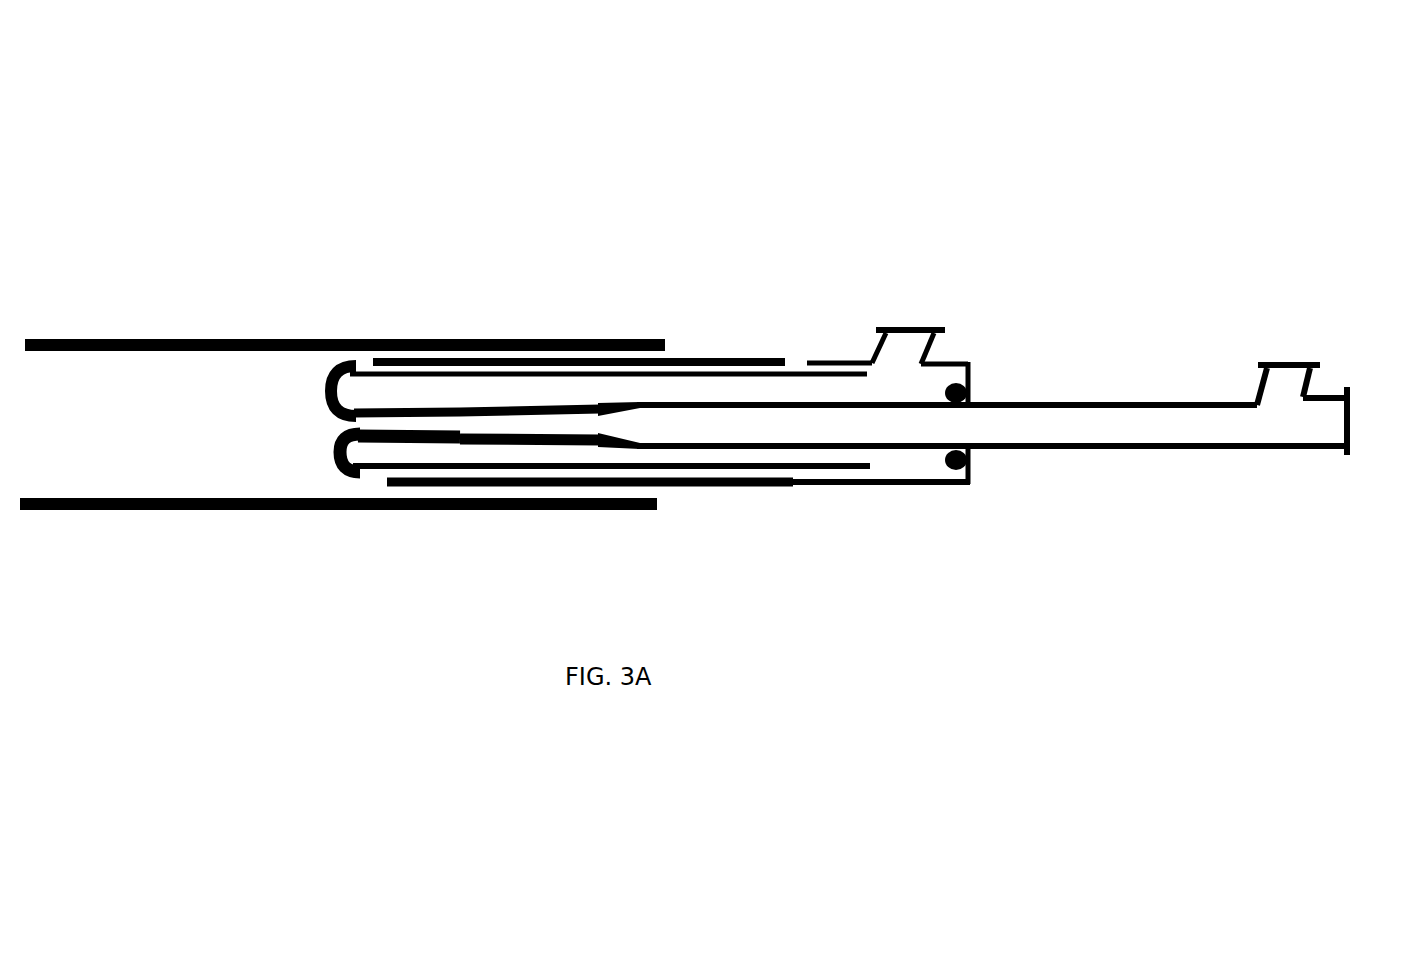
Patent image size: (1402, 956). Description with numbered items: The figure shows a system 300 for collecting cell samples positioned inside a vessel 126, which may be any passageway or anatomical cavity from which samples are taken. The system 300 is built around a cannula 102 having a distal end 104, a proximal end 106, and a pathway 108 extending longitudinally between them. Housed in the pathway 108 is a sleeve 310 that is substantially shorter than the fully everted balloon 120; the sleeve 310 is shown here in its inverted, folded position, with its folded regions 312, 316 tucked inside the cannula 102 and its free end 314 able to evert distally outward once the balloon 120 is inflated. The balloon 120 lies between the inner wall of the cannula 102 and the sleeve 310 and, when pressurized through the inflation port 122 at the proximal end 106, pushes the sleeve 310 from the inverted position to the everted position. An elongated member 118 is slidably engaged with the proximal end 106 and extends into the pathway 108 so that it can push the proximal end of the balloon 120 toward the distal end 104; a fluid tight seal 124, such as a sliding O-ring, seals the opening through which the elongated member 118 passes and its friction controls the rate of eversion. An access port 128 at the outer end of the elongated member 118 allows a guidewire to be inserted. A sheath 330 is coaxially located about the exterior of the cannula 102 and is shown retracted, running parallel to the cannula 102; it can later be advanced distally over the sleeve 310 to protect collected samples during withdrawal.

The system 300 is at (80, 130).
The vessel 126 is at (223, 327).
The distal end 104 is at (363, 370).
The first fold of balloon 312 is at (337, 418).
The first balloon wall portion 316 is at (412, 408).
The sleeve 310 is at (333, 464).
The end 314 is at (462, 422).
The balloon 120 is at (571, 392).
The elongated member 118 is at (1133, 450).
The access port 128 is at (1300, 363).
The pathway 108 is at (787, 388).
The inflation port 122 is at (910, 309).
The fluid tight seal 124 is at (970, 390).
The proximal end 106 is at (902, 487).
The cannula 102 is at (824, 499).
The sheath 330 is at (740, 324).